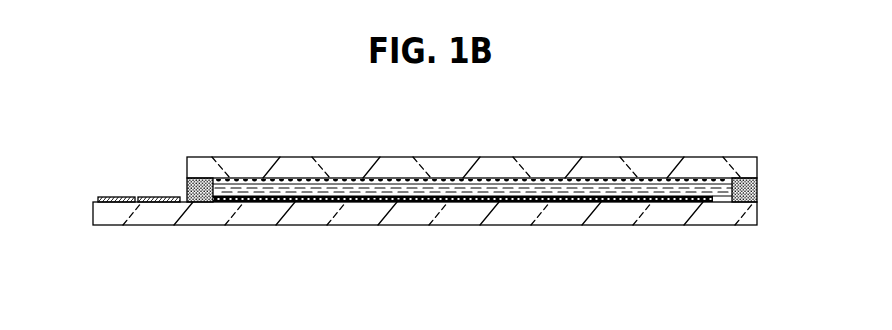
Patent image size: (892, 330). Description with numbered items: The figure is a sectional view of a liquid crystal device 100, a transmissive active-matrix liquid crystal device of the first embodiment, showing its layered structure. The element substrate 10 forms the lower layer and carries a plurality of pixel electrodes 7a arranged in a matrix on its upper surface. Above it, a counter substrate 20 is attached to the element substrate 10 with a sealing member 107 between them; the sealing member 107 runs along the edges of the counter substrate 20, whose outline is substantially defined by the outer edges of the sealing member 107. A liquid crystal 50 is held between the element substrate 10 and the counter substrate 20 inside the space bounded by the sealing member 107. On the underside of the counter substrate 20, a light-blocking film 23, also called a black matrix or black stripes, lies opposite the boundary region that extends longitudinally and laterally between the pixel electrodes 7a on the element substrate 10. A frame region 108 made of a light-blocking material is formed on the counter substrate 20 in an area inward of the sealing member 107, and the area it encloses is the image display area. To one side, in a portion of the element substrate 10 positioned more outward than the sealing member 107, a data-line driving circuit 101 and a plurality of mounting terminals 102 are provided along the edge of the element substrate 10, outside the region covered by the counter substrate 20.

The liquid crystal device 100 is at (632, 111).
The element substrate 10 is at (655, 213).
The counter substrate 20 is at (743, 157).
The light-blocking film 23 is at (508, 178).
The liquid crystal 50 is at (513, 197).
The pixel electrodes 7a is at (427, 203).
The data-line driving circuit 101 is at (163, 197).
The mounting terminals 102 is at (117, 197).
The sealing member 107 is at (202, 202).
The frame region 108 is at (225, 178).